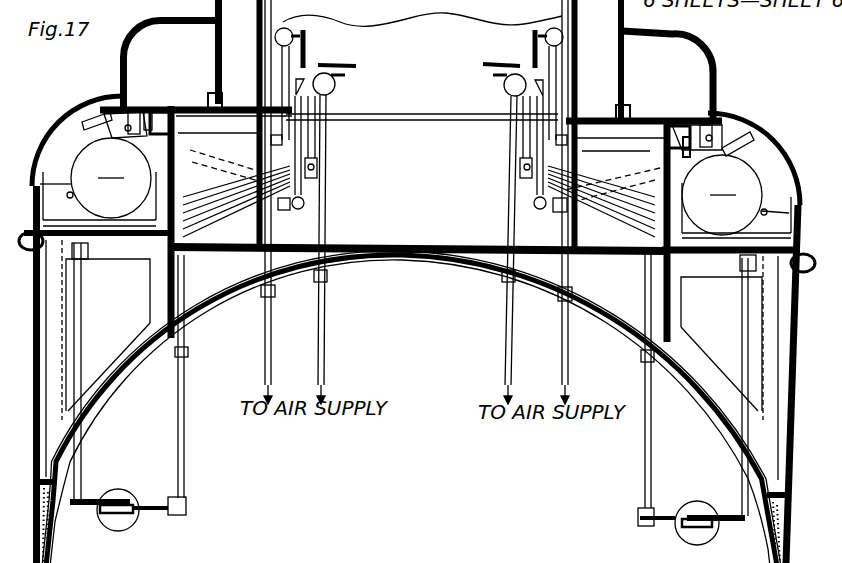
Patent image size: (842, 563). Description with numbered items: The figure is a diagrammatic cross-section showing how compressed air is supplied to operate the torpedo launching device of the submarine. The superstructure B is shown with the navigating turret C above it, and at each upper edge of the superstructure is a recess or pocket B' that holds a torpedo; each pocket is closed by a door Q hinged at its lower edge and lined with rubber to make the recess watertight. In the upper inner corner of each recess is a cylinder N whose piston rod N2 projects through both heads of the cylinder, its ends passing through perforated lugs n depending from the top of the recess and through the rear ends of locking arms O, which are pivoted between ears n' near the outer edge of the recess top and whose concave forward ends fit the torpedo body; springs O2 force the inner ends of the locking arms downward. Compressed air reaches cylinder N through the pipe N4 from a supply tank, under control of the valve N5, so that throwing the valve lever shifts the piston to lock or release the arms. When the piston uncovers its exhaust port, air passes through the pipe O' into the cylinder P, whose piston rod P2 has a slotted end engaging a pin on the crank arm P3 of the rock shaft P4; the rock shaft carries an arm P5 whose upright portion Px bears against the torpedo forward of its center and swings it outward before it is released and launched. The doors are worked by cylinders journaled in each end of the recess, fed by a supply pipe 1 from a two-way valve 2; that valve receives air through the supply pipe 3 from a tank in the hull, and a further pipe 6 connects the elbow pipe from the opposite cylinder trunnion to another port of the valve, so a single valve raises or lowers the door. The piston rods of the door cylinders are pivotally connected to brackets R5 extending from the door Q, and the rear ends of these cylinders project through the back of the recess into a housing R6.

The superstructure B is at (429, 71).
The recess or pocket B' is at (415, 190).
The door Q is at (52, 128).
The piston rod N2 is at (732, 172).
The brackets R5 is at (415, 192).
The pipe N4 is at (270, 52).
The valve N5 is at (419, 82).
The two-way valve 2 is at (330, 70).
The navigating turret C is at (422, 66).
The supply pipe 3 is at (330, 143).
The compressed air supply pipe 1 is at (318, 163).
The pipe 6 is at (534, 204).
The cylinder N is at (152, 112).
The perforated ears or lugs n is at (417, 118).
The ears n' is at (425, 117).
The springs O2 is at (100, 122).
The locking arms O is at (409, 129).
The arm P5 is at (98, 236).
The upright portion Px is at (150, 268).
The rock shaft P4 is at (85, 353).
The pipe O' is at (418, 393).
The housing R6 is at (236, 260).
The crank arm P3 is at (96, 498).
The piston rod P2 is at (110, 514).
The cylinder P is at (118, 530).